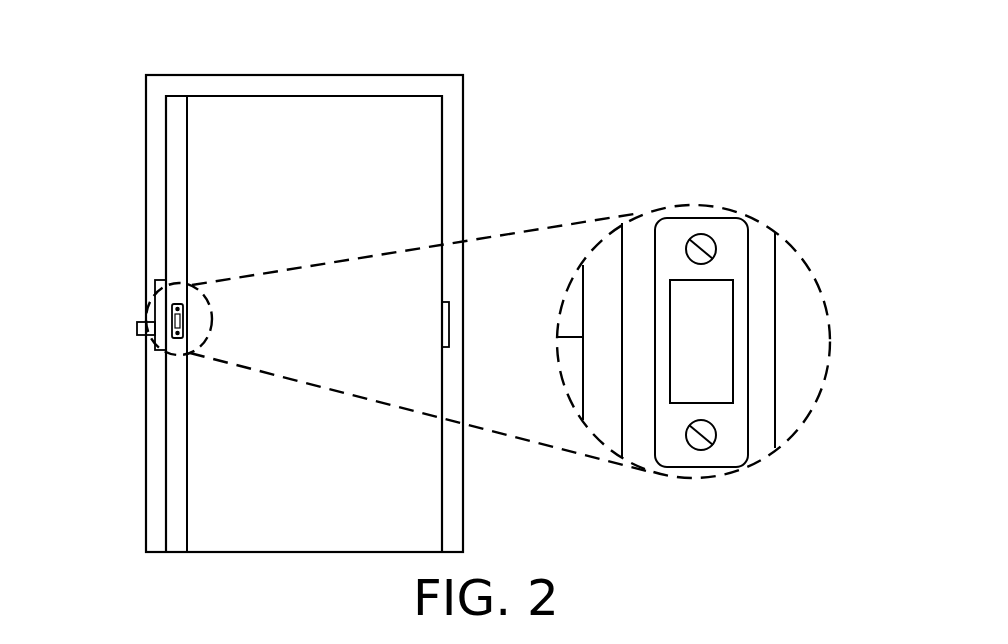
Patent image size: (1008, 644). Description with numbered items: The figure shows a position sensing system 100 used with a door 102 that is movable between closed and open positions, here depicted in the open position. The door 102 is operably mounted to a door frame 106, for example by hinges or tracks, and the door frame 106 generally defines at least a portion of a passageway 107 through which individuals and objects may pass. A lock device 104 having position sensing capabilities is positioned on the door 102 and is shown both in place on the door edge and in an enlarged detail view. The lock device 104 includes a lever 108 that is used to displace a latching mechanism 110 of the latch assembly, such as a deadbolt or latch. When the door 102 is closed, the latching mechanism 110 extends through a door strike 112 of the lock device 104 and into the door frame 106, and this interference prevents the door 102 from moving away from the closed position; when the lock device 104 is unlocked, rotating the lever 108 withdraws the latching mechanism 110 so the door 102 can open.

The position sensing system 100 is at (133, 302).
The door 102 is at (175, 108).
The lock device 104 is at (160, 315).
The door frame 106 is at (452, 140).
The passageway 107 is at (328, 201).
The lever 108 is at (137, 328).
The latching mechanism 110 is at (712, 344).
The door strike 112 is at (442, 325).